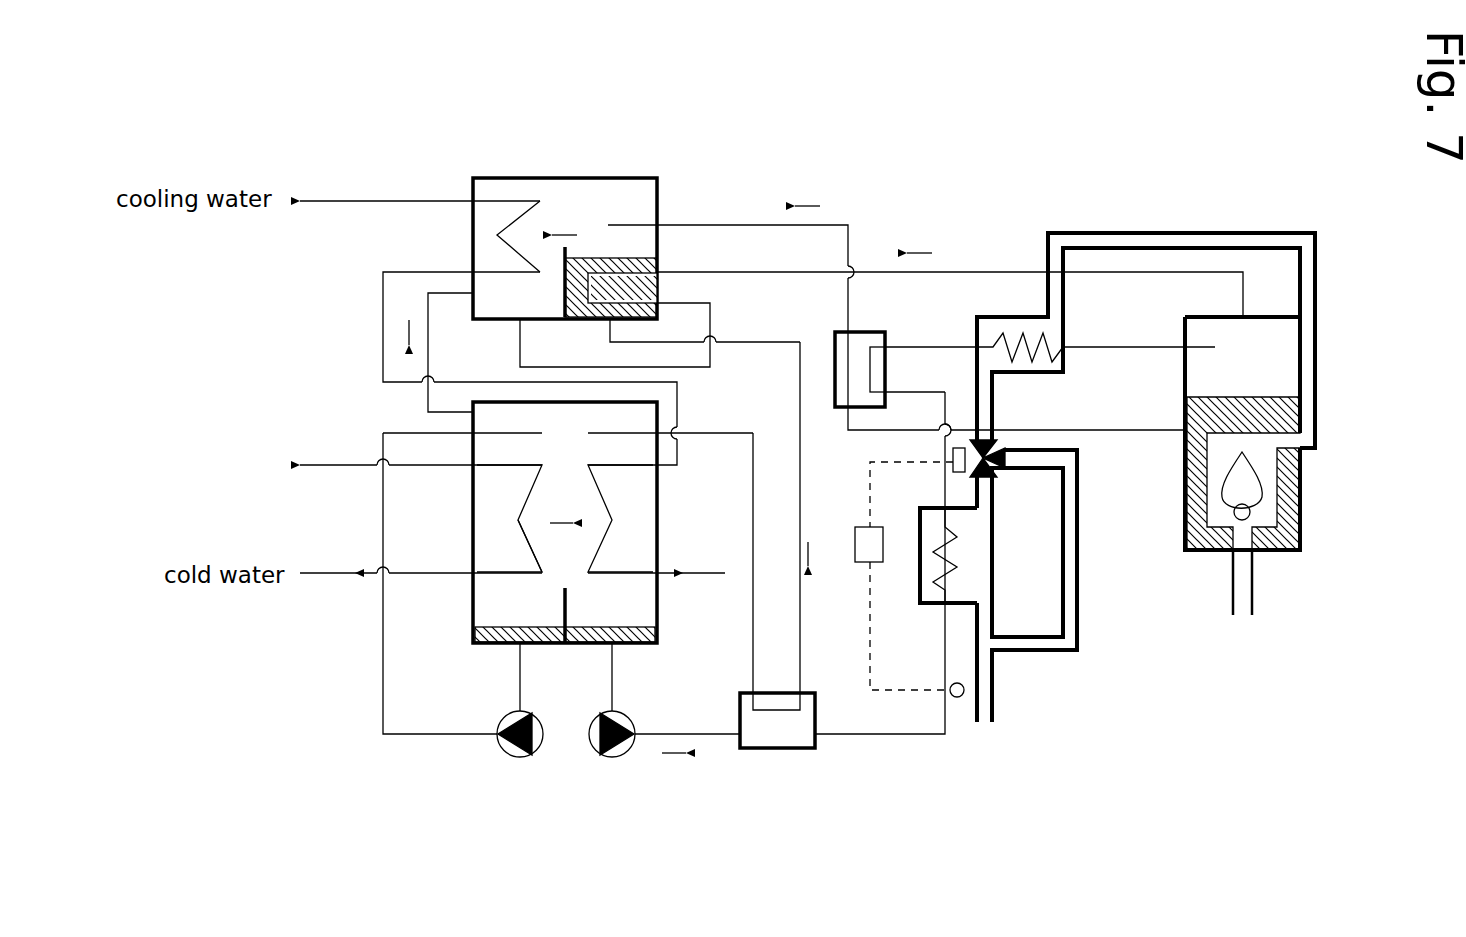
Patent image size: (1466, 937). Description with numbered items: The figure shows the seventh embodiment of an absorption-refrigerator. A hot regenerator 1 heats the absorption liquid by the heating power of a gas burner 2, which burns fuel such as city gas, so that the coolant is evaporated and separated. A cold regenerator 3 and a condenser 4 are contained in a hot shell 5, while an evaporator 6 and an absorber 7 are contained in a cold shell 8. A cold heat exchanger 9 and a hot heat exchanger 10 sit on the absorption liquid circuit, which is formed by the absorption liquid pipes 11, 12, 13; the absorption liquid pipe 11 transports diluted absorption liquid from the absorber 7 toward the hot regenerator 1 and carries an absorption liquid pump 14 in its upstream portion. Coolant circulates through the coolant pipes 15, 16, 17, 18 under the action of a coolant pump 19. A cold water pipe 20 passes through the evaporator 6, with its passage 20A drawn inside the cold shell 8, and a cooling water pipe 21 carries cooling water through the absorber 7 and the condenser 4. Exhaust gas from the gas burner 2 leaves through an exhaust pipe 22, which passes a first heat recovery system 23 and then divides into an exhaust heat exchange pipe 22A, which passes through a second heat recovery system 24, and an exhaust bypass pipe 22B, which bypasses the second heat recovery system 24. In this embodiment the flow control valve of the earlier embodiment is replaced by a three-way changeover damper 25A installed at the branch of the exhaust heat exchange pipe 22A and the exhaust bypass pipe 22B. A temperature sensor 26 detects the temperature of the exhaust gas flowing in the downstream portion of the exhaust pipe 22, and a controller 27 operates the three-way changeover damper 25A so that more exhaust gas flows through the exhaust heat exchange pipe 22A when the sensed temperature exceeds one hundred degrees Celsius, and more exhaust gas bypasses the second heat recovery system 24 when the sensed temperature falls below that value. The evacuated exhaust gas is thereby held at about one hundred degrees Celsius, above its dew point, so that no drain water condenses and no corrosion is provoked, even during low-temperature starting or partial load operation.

The hot regenerator 1 is at (1302, 478).
The gas burner 2 is at (1265, 517).
The cold regenerator 3 is at (657, 197).
The condenser 4 is at (473, 235).
The hot shell 5 is at (578, 178).
The evaporator 6 is at (485, 498).
The absorber 7 is at (640, 502).
The cold shell 8 is at (472, 600).
The cold heat exchanger 9 is at (777, 748).
The hot heat exchanger 10 is at (832, 333).
The absorption liquid pipe 11 is at (897, 735).
The absorption liquid pipe 12 is at (1103, 430).
The absorption liquid pipe 13 is at (800, 488).
The absorption liquid pump 14 is at (610, 757).
The coolant pipe 15 is at (970, 271).
The coolant pipe 16 is at (700, 368).
The coolant pipe 17 is at (428, 340).
The coolant pipe 18 is at (382, 709).
The coolant pump 19 is at (508, 757).
The cold water pipe 20 is at (320, 581).
The cold water passage 20A is at (527, 542).
The cooling water pipe 21 is at (698, 577).
The exhaust pipe 22 is at (1135, 233).
The exhaust heat exchange pipe 22A is at (993, 492).
The exhaust bypass pipe 22B is at (1077, 537).
The first heat recovery system 23 is at (1043, 377).
The second heat recovery system 24 is at (917, 570).
The three-way changeover damper 25A is at (950, 467).
The temperature sensor 26 is at (960, 697).
The controller 27 is at (855, 545).